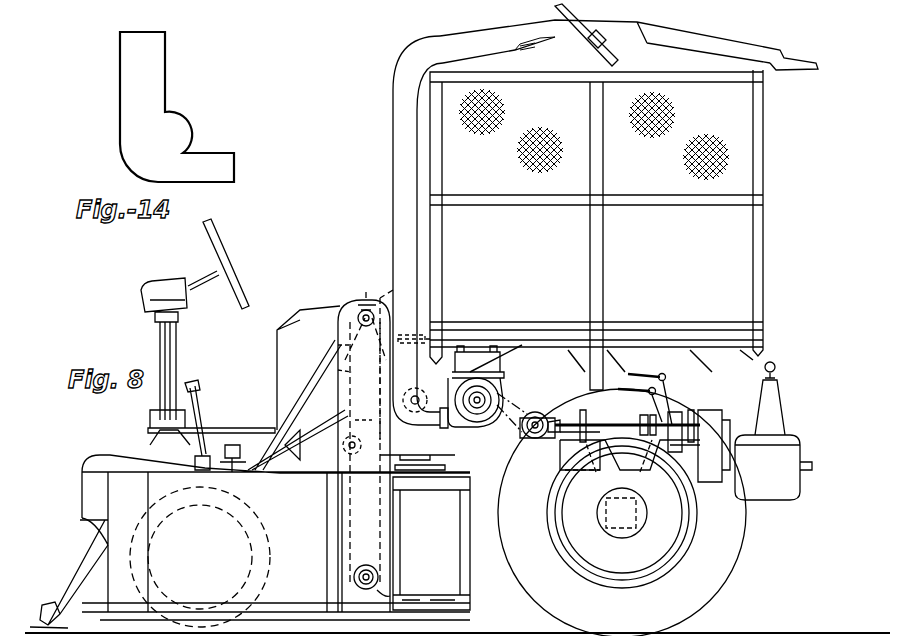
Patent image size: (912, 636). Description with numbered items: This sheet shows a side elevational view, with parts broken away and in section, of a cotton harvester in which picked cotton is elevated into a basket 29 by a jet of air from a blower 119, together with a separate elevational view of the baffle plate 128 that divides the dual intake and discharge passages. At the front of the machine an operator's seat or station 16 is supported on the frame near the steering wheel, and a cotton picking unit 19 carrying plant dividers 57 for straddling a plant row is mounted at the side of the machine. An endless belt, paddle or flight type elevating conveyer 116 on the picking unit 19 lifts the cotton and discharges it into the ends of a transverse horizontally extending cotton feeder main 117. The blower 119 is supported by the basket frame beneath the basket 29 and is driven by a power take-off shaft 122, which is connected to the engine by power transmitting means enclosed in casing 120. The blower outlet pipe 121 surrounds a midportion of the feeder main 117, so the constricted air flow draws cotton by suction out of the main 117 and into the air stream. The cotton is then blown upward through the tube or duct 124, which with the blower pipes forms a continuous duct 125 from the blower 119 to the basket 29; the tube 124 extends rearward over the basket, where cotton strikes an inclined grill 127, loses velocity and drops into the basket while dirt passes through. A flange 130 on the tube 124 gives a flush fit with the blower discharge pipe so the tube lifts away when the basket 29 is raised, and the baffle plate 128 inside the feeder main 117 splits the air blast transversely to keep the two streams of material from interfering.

In FIG. 8, the operator's seat or station 16 is at (333, 312).
In FIG. 8, the cotton picking unit 19 is at (312, 578).
In FIG. 8, the basket 29 is at (648, 173).
In FIG. 8, the plant divider 57 is at (75, 558).
In FIG. 8, the elevating conveyer 116 is at (355, 506).
In FIG. 8, the cotton feeder main 117 is at (418, 393).
In FIG. 8, the blower 119 is at (490, 458).
In FIG. 8, the casing 120 is at (703, 412).
In FIG. 8, the blower outlet pipe 121 is at (440, 458).
In FIG. 8, the power take-off shaft 122 is at (640, 413).
In FIG. 8, the tube or duct 124 is at (395, 150).
In FIG. 8, the continuous duct 125 is at (387, 218).
In FIG. 8, the inclined grill 127 is at (629, 39).
In FIG. 14, the baffle plate 128 is at (162, 93).
In FIG. 8, the flange 130 is at (404, 338).